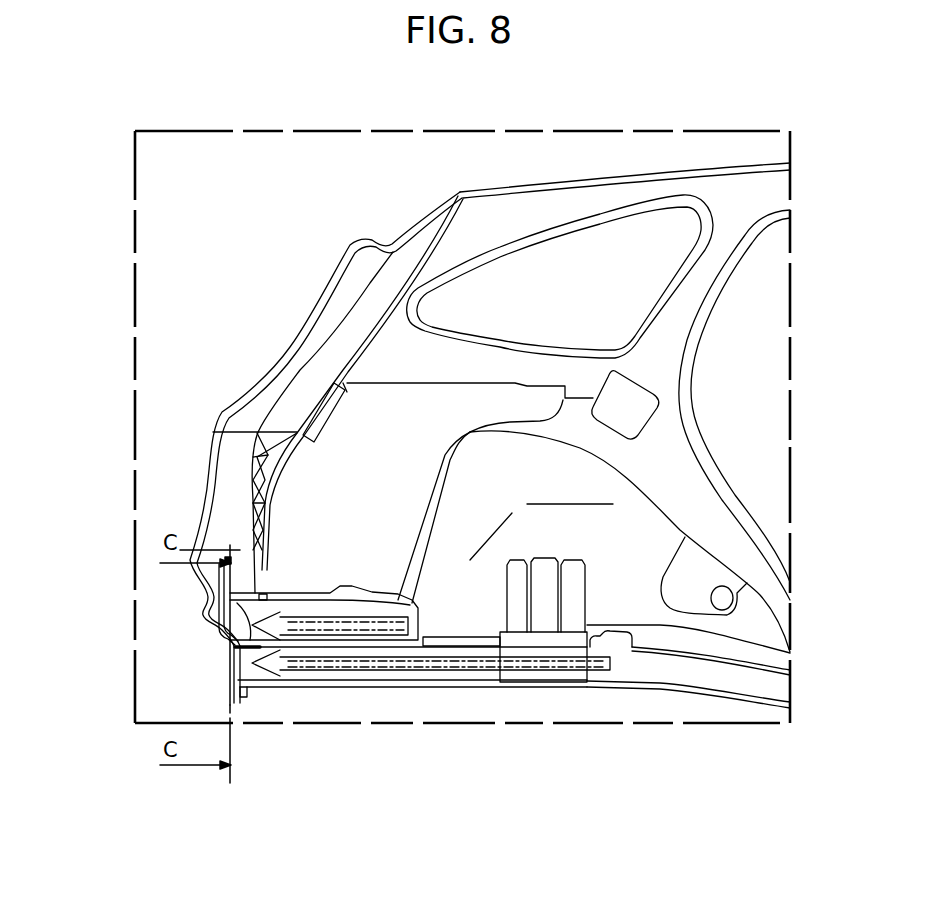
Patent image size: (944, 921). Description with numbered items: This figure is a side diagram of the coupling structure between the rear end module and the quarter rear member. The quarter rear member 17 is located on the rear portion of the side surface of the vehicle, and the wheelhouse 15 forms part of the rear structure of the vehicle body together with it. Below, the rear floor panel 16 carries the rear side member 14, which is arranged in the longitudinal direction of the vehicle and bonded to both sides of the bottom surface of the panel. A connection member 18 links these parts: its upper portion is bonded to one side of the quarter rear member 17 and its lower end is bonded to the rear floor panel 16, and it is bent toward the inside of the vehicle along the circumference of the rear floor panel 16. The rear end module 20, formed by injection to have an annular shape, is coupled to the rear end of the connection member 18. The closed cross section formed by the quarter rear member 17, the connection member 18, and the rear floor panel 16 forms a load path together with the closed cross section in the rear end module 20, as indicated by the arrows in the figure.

The rear end module 20 is at (249, 324).
The quarter rear member 17 is at (340, 467).
The wheelhouse 15 is at (607, 525).
The connection member 18 is at (305, 640).
The rear floor panel 16 is at (375, 647).
The rear side member 14 is at (450, 672).